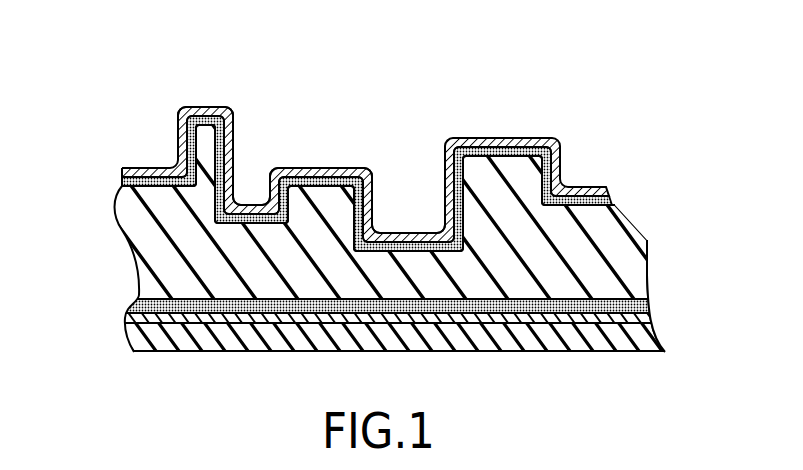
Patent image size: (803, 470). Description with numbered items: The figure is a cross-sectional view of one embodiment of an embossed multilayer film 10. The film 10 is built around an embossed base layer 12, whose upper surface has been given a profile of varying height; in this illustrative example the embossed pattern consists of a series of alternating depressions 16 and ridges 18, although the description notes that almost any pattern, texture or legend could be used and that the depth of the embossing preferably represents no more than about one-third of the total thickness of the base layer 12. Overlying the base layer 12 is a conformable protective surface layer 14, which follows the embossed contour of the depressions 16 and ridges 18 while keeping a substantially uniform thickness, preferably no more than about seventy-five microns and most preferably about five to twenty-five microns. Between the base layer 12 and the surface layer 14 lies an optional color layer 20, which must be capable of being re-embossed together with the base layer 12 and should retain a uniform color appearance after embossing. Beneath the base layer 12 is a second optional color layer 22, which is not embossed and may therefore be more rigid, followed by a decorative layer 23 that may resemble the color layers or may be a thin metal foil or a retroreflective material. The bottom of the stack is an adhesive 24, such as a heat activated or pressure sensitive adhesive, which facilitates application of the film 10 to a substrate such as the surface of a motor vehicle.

The embossed multilayer film 10 is at (130, 111).
The embossed base layer 12 is at (615, 228).
The protective surface layer 14 is at (575, 183).
The depressions 16 is at (249, 204).
The ridges 18 is at (197, 107).
The color layer 20 is at (146, 187).
The color layer 22 is at (622, 303).
The decorative layer 23 is at (128, 320).
The adhesive 24 is at (582, 352).